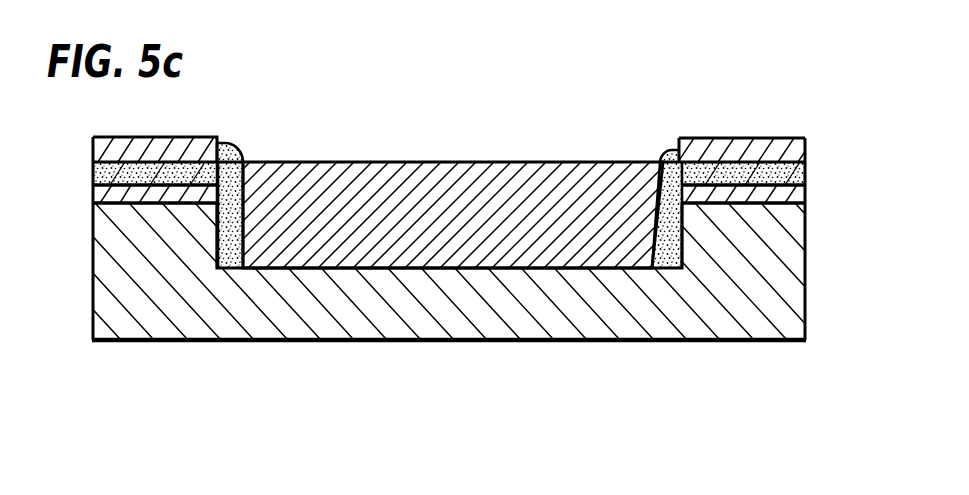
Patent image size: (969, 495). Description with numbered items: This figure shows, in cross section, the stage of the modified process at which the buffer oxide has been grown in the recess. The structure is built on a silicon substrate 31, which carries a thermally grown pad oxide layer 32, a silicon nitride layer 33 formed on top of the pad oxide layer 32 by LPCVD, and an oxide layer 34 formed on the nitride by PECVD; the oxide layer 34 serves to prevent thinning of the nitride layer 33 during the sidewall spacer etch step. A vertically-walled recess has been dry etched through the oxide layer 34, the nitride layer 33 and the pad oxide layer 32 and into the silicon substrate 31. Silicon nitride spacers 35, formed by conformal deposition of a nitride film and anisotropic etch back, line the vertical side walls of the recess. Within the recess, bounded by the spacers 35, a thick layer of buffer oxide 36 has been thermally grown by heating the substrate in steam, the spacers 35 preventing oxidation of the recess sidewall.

The silicon substrate 31 is at (173, 278).
The pad oxide layer 32 is at (800, 195).
The silicon nitride layer 33 is at (790, 173).
The oxide layer 34 is at (740, 150).
The silicon nitride spacers 35 is at (233, 200).
The buffer oxide 36 is at (393, 200).